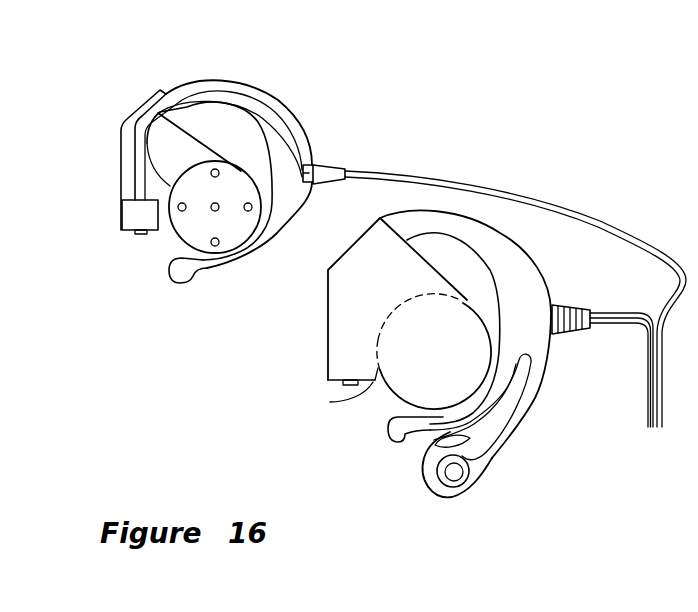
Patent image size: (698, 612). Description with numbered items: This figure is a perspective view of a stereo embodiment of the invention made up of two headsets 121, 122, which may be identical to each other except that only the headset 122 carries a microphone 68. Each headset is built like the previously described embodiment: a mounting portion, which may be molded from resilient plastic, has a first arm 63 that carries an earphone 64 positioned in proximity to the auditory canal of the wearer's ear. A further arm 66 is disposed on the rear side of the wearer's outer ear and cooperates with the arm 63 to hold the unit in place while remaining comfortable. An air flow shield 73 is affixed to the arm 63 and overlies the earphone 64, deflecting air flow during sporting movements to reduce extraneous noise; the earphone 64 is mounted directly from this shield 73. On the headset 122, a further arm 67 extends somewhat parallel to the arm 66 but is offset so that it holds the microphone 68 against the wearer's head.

The headset 121 is at (312, 112).
The headset 122 is at (560, 272).
The first arm 63 is at (140, 184).
The air flow shield 73 is at (122, 138).
The earphone 64 is at (190, 227).
The further arm 66 is at (198, 270).
The further arm 67 is at (487, 460).
The microphone 68 is at (410, 452).